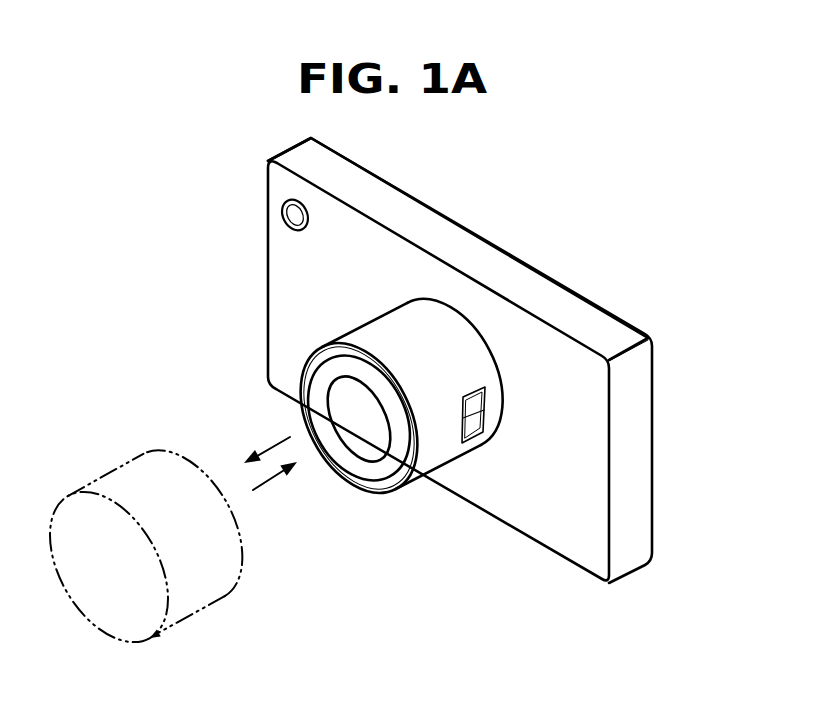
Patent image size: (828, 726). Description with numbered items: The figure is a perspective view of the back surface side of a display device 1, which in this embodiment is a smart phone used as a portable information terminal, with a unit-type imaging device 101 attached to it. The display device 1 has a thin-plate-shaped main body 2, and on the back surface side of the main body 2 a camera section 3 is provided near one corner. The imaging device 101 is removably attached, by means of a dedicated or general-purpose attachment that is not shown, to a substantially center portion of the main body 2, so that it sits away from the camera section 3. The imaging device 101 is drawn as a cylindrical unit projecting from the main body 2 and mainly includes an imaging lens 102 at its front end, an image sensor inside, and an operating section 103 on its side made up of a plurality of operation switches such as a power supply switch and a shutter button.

The display device 1 is at (486, 233).
The main body 2 is at (557, 310).
The camera section 3 is at (287, 220).
The imaging device 101 is at (250, 557).
The imaging lens 102 is at (343, 406).
The operating section 103 is at (486, 410).